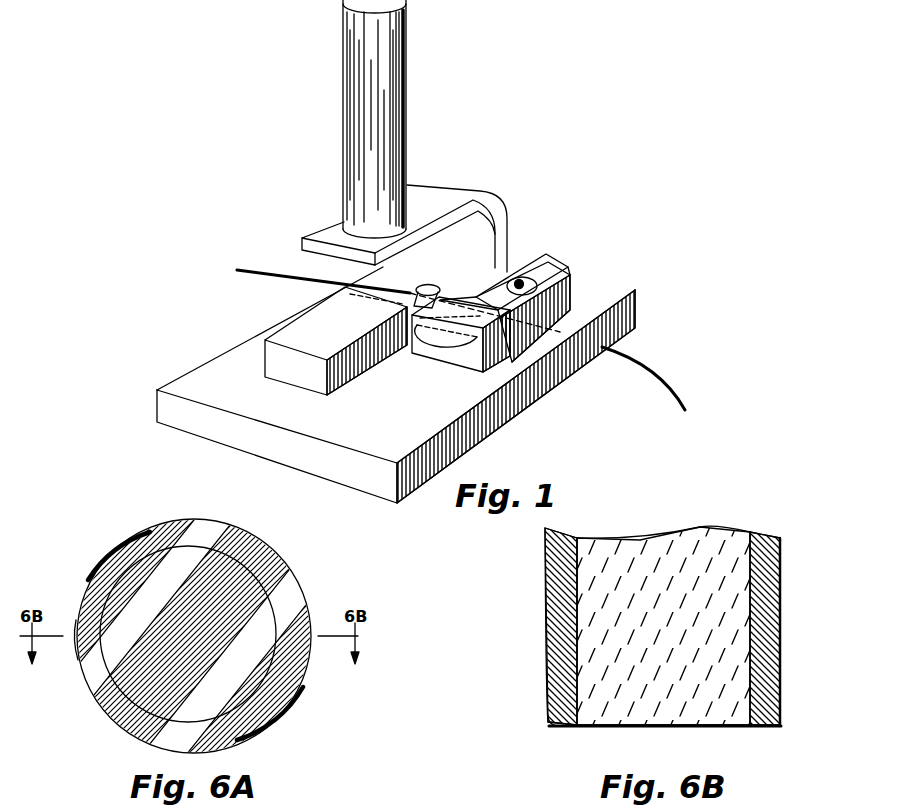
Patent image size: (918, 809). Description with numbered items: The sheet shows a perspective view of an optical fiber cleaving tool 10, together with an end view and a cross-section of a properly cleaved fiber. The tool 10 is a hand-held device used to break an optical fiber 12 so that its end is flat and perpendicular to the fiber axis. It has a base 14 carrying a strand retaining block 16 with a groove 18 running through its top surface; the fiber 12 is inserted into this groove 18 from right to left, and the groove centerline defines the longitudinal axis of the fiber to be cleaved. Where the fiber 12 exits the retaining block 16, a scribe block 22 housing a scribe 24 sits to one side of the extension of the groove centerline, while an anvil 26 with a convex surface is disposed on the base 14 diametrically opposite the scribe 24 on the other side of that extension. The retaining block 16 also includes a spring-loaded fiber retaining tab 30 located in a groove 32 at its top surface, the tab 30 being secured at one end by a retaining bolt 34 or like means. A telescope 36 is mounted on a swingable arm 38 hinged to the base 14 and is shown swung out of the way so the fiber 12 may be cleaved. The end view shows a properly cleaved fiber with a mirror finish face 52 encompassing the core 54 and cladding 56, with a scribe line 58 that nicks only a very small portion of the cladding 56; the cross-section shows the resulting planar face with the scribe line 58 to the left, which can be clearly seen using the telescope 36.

In FIG. 1, the optical fiber cleaving tool 10 is at (545, 190).
In FIG. 1, the optical fiber 12 is at (626, 360).
In FIG. 1, the base 14 is at (411, 444).
In FIG. 1, the strand retaining block 16 is at (568, 300).
In FIG. 1, the groove 18 is at (478, 372).
In FIG. 1, the scribe block 22 is at (505, 286).
In FIG. 1, the scribe 24 is at (416, 286).
In FIG. 1, the anvil 26 is at (337, 388).
In FIG. 1, the spring-loaded fiber retaining tab 30 is at (433, 345).
In FIG. 1, the groove 32 is at (513, 266).
In FIG. 1, the retaining bolt 34 is at (520, 282).
In FIG. 1, the telescope 36 is at (404, 66).
In FIG. 1, the swingable arm 38 is at (425, 182).
In FIG. 6A, the mirror finish face 52 is at (140, 552).
In FIG. 6B, the mirror finish face 52 is at (597, 730).
In FIG. 6A, the core 54 is at (262, 606).
In FIG. 6B, the core 54 is at (735, 667).
In FIG. 6A, the cladding 56 is at (270, 570).
In FIG. 6B, the cladding 56 is at (555, 622).
In FIG. 6A, the scribe line 58 is at (73, 650).
In FIG. 6B, the scribe line 58 is at (548, 724).